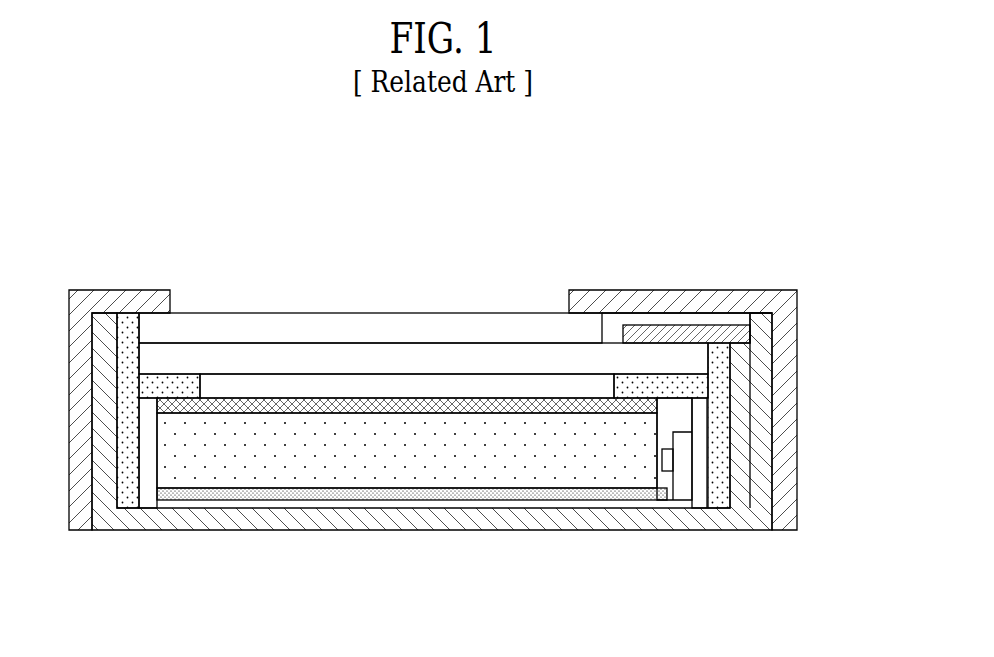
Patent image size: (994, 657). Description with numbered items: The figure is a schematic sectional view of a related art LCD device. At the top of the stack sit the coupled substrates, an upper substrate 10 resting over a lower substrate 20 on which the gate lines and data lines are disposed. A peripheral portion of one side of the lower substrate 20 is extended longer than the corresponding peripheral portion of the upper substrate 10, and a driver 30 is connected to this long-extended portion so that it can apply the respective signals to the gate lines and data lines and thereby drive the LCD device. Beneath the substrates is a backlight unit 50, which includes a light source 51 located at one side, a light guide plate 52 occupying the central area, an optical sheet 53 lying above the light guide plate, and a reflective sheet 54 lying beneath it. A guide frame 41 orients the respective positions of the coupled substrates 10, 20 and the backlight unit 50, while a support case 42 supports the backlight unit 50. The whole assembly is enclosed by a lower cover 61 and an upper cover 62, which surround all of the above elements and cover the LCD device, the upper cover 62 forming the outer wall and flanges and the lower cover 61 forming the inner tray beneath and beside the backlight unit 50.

The upper substrate 10 is at (340, 332).
The lower substrate 20 is at (394, 357).
The driver 30 is at (683, 337).
The guide frame 41 is at (718, 483).
The support case 42 is at (698, 488).
The backlight unit 50 is at (424, 511).
The light source 51 is at (634, 489).
The light guide plate 52 is at (453, 462).
The optical sheet 53 is at (487, 405).
The reflective sheet 54 is at (548, 497).
The lower cover 61 is at (763, 460).
The upper cover 62 is at (785, 432).